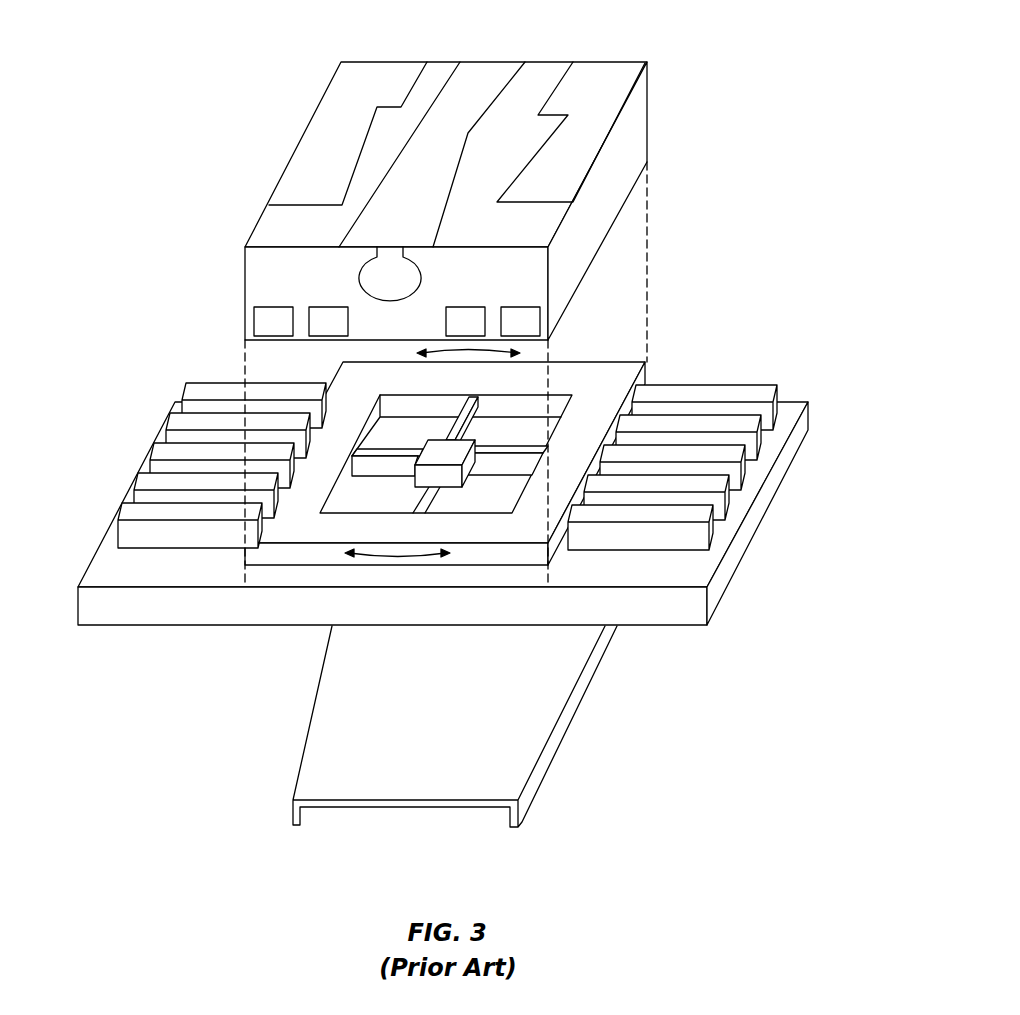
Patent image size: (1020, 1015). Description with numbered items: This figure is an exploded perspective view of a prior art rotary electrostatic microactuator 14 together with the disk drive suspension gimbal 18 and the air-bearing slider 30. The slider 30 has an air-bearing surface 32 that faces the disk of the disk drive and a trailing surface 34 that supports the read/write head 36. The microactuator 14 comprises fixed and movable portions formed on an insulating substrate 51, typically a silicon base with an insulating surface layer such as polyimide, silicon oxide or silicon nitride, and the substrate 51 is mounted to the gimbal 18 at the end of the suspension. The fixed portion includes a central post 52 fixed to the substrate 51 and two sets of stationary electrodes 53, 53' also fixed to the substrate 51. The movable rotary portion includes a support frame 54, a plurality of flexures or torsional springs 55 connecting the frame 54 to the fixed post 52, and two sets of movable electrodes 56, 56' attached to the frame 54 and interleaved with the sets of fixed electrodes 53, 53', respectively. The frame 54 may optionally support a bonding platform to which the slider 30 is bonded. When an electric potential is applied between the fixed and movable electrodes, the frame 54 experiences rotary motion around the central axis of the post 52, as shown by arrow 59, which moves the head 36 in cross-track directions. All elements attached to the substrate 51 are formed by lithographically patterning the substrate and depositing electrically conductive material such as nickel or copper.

The rotary electrostatic microactuator 14 is at (813, 380).
The disk drive suspension gimbal 18 is at (550, 700).
The air-bearing slider 30 is at (637, 108).
The air-bearing surface 32 is at (469, 70).
The trailing surface 34 is at (255, 262).
The read/write head 36 is at (372, 287).
The insulating substrate 51 is at (88, 608).
The central post 52 is at (475, 440).
The stationary electrodes 53 is at (200, 459).
The stationary electrodes 53' is at (719, 481).
The support frame 54 is at (628, 372).
The flexures or torsional springs 55 is at (368, 453).
The movable electrodes 56 is at (135, 455).
The movable electrodes 56' is at (711, 470).
The arrow 59 is at (443, 348).